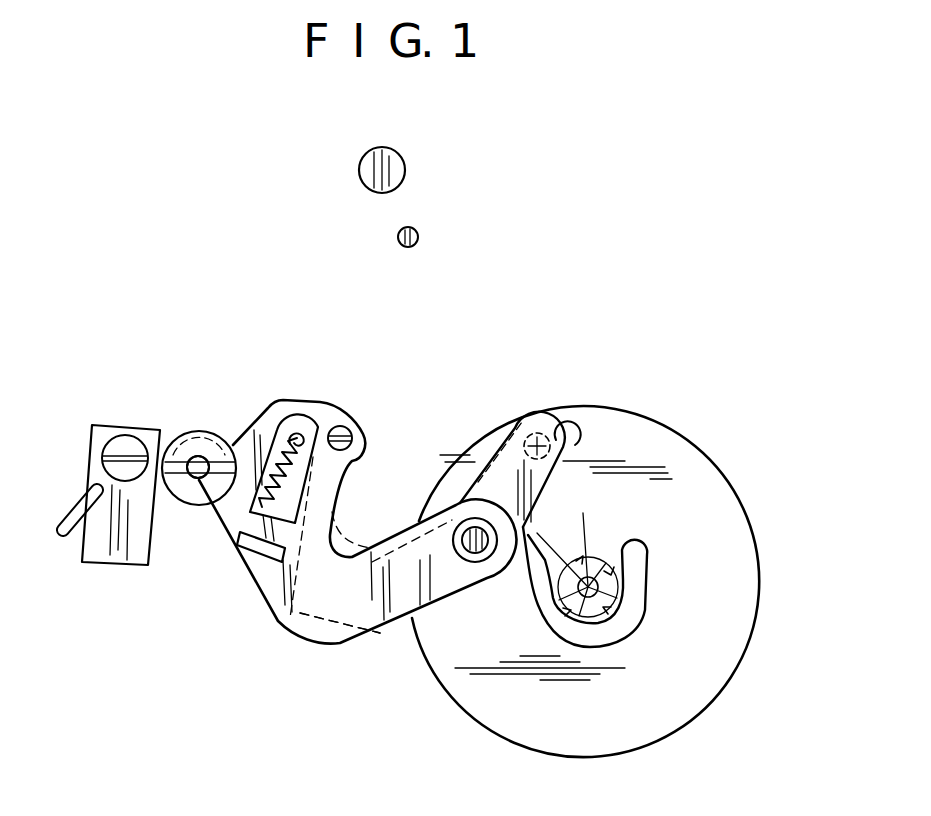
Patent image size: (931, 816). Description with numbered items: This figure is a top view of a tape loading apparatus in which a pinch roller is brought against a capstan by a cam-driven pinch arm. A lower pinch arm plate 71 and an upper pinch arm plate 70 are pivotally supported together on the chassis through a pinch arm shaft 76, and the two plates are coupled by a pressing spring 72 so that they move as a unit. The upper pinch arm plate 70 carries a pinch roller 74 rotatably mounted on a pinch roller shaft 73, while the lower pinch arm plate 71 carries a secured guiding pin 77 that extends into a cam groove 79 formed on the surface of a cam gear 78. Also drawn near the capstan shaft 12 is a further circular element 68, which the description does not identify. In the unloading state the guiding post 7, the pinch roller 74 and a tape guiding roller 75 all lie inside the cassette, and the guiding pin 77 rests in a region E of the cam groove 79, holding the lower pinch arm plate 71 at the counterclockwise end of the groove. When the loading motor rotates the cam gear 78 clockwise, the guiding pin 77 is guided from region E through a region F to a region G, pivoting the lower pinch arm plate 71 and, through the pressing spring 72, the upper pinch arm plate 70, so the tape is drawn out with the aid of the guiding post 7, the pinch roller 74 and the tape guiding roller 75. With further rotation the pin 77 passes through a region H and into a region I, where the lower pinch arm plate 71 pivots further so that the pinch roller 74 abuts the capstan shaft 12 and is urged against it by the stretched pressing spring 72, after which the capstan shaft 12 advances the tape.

The guiding post 7 is at (142, 428).
The capstan shaft 12 is at (420, 237).
The pin 68 is at (405, 165).
The upper pinch arm plate 70 is at (268, 608).
The lower pinch arm plate 71 is at (347, 645).
The pressing spring 72 is at (282, 425).
The pinch roller shaft 73 is at (195, 500).
The pinch roller 74 is at (203, 430).
The tape guiding roller 75 is at (352, 428).
The pinch arm shaft 76 is at (455, 518).
The guiding pin 77 is at (534, 438).
The cam gear 78 is at (693, 457).
The cam groove 79 is at (653, 563).
The region E is at (580, 557).
The region F is at (547, 580).
The region G is at (557, 610).
The region H is at (607, 617).
The region I is at (653, 595).